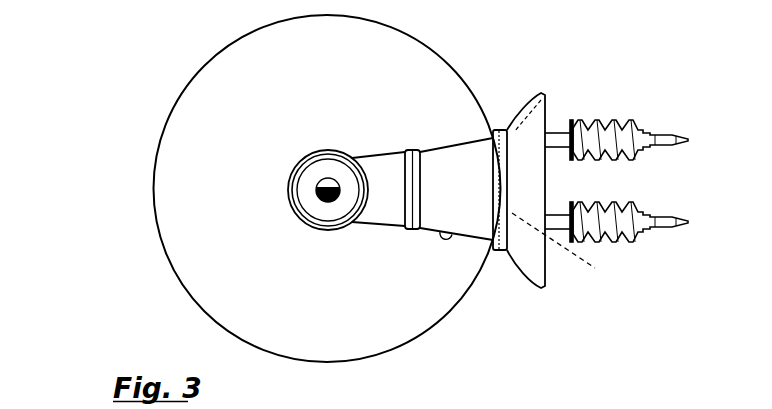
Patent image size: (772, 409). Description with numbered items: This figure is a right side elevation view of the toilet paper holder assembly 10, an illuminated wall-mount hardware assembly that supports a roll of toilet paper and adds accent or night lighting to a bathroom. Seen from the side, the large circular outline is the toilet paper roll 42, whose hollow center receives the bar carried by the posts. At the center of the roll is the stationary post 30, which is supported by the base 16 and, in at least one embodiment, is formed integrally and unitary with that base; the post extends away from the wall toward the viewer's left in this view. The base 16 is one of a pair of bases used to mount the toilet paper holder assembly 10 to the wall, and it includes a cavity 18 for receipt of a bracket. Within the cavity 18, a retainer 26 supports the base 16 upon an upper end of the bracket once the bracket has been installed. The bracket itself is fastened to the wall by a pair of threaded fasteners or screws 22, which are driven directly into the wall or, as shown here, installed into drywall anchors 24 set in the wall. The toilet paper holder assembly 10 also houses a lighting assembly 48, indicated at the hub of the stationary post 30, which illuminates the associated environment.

The toilet paper holder assembly 10 is at (152, 90).
The toilet paper roll 42 is at (153, 187).
The lighting assembly 48 is at (337, 231).
The stationary post 30 is at (443, 148).
The retainer 26 is at (508, 136).
The base 16 is at (515, 267).
The cavity 18 is at (576, 249).
The screws 22 is at (571, 120).
The drywall anchors 24 is at (648, 137).